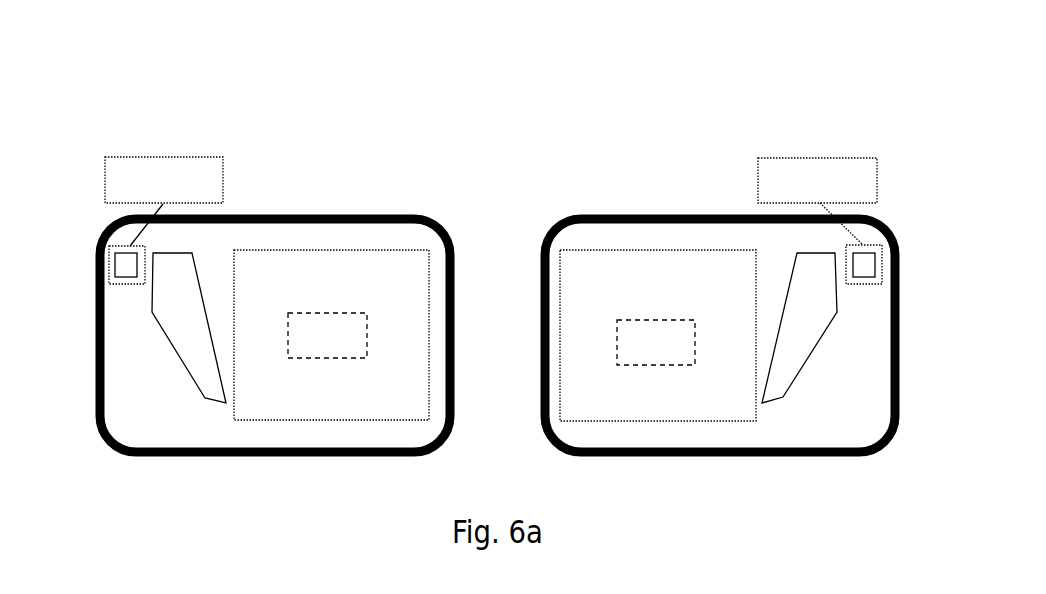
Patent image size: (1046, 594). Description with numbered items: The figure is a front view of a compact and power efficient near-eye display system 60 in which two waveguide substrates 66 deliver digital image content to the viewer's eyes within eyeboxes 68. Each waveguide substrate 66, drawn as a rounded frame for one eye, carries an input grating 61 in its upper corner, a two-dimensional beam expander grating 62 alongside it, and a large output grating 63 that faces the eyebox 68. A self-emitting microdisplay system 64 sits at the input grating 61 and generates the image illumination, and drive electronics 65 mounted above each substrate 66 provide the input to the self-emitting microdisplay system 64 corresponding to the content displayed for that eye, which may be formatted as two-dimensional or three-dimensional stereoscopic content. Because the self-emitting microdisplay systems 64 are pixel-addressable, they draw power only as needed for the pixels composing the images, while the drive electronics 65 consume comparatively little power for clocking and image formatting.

The near-eye display system 60 is at (551, 103).
The input grating 61 is at (112, 247).
The 2D beam expander grating 62 is at (182, 320).
The output grating 63 is at (635, 267).
The self-emitting microdisplay system 64 is at (130, 267).
The drive electronics 65 is at (158, 178).
The waveguide substrate 66 is at (635, 435).
The eyebox 68 is at (342, 332).